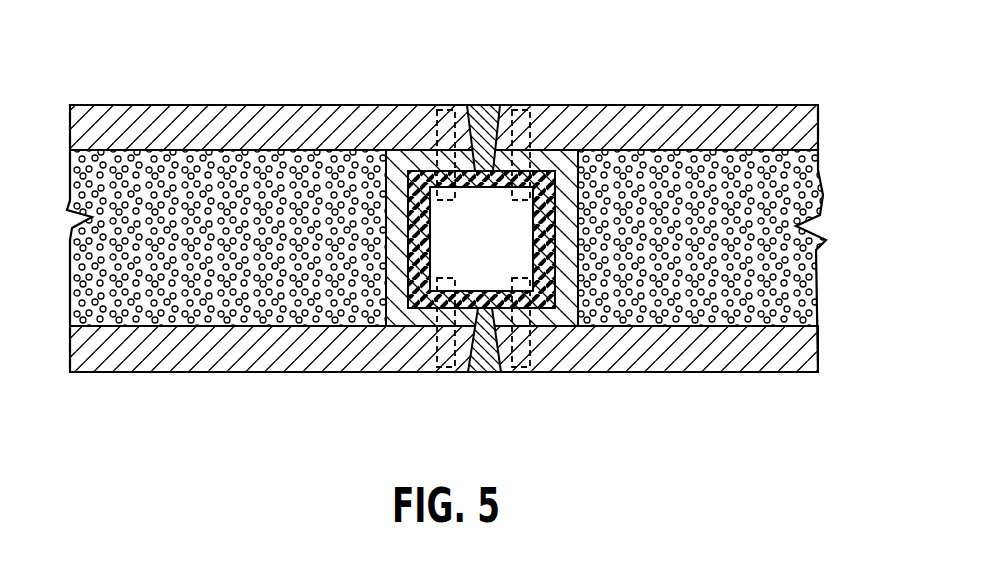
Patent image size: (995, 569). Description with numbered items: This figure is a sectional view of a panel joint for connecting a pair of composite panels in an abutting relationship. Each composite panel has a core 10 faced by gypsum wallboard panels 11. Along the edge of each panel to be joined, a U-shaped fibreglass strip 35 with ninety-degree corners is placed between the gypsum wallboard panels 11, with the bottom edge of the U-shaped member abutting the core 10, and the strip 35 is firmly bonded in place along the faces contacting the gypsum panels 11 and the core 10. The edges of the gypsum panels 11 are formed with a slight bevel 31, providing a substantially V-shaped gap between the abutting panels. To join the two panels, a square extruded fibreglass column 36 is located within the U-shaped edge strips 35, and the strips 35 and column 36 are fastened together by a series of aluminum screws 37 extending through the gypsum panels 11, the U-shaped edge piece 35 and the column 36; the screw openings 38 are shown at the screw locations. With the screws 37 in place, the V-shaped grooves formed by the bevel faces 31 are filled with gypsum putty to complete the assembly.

The core 10 is at (818, 166).
The gypsum wallboard panel 11 is at (748, 112).
The bevel 31 is at (493, 110).
The U-shaped fibreglass strip 35 is at (392, 165).
The square extruded fibreglass column 36 is at (549, 172).
The aluminum screw 37 is at (452, 108).
The via conductor 38 is at (472, 108).